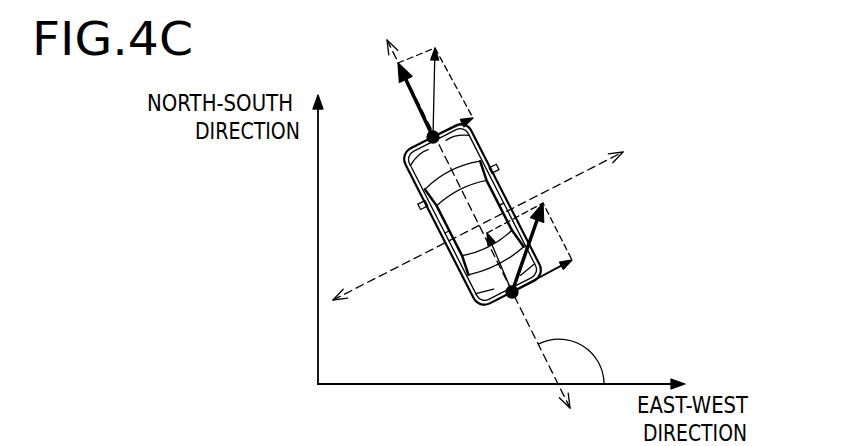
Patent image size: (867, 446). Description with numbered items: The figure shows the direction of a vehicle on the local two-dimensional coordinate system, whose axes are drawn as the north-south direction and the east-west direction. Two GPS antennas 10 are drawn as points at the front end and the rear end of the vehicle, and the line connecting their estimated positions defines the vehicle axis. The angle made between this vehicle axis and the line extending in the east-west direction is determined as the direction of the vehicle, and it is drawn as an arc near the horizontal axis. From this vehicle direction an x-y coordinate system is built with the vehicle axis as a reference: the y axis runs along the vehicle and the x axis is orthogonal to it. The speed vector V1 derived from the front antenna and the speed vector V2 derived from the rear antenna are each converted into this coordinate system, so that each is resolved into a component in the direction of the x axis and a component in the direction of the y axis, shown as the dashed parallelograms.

The GPS antenna 10 is at (478, 132).
The speed vector V1 is at (435, 80).
The speed vector V2 is at (545, 244).
The x-axis x is at (486, 217).
The y-axis y is at (471, 213).